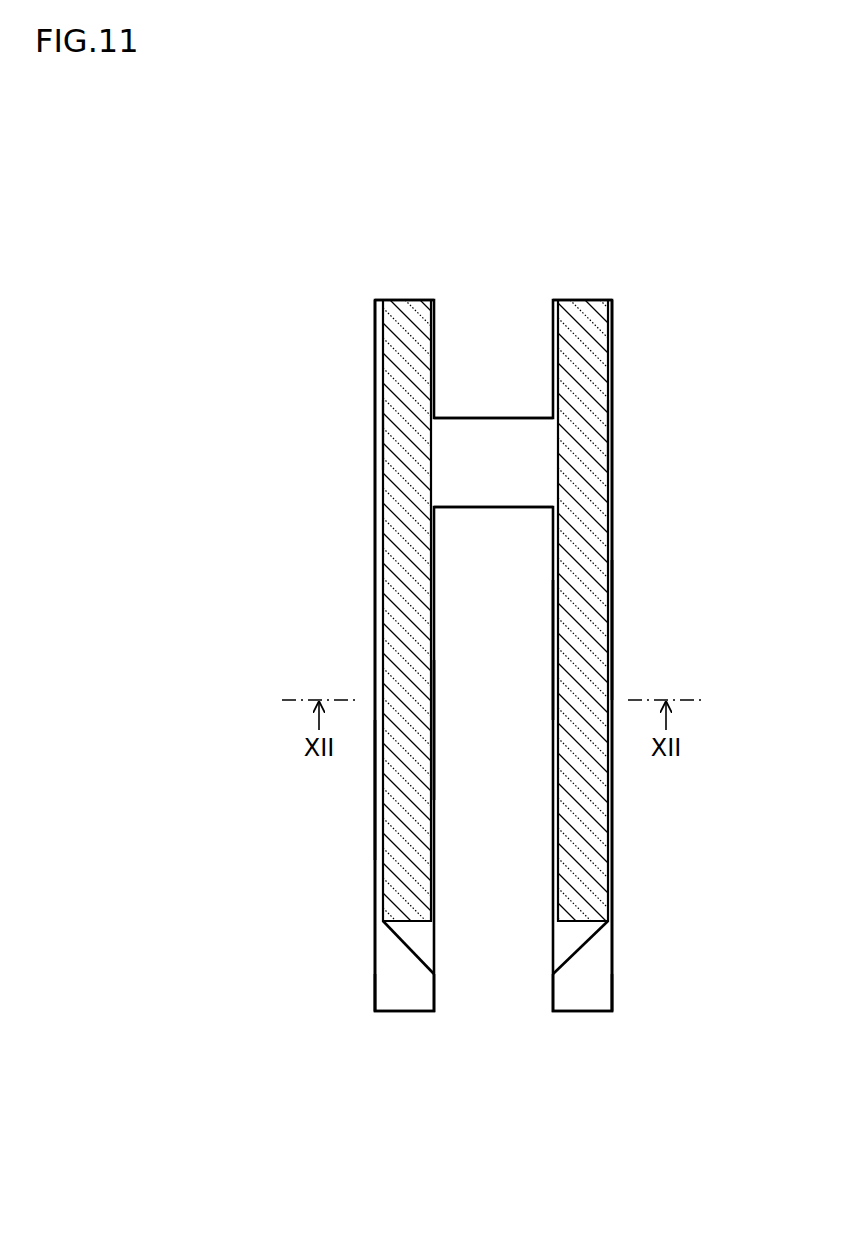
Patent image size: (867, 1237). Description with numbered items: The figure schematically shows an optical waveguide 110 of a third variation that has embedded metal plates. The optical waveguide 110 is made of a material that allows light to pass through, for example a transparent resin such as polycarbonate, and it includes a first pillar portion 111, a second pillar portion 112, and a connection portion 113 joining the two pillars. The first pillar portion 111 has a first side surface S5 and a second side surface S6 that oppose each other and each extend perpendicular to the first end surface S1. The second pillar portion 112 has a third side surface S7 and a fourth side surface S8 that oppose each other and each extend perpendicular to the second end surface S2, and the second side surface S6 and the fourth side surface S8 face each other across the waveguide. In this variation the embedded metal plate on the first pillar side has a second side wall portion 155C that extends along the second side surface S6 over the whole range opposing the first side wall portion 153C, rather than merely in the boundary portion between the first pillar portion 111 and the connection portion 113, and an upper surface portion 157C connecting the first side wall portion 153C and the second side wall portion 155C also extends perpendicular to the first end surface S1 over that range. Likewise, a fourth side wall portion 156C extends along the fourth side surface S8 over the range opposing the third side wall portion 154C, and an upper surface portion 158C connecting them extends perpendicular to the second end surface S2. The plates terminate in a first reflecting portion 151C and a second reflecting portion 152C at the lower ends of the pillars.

The optical waveguide 110 is at (615, 782).
The first pillar portion 111 is at (587, 990).
The second pillar portion 112 is at (398, 990).
The connection portion 113 is at (463, 507).
The first reflecting portion 151C is at (590, 940).
The second reflecting portion 152C is at (400, 943).
The first side wall portion 153C is at (605, 398).
The third side wall portion 154C is at (380, 620).
The second side wall portion 155C is at (558, 443).
The fourth side wall portion 156C is at (431, 440).
The upper surface portion 157C is at (590, 438).
The upper surface portion 158C is at (398, 435).
The first end surface S1 is at (580, 300).
The second end surface S2 is at (413, 300).
The first side surface S5 is at (612, 626).
The second side surface S6 is at (553, 637).
The third side surface S7 is at (375, 777).
The fourth side surface S8 is at (435, 720).